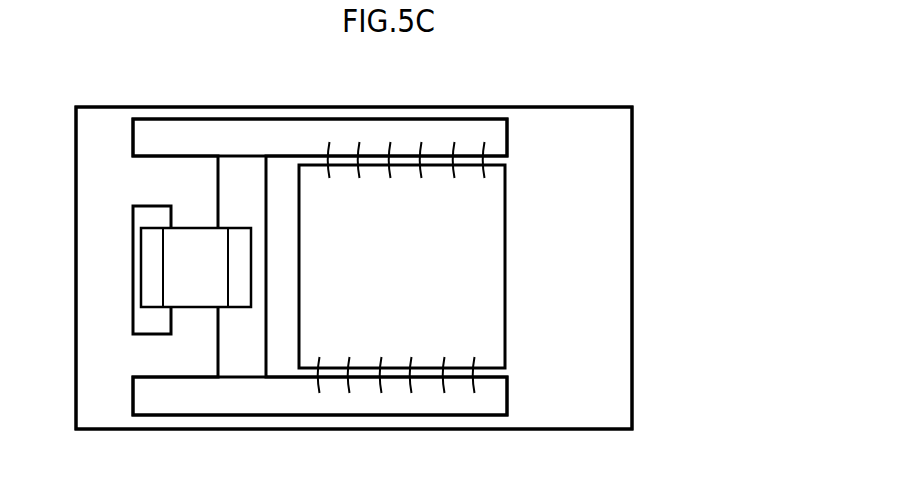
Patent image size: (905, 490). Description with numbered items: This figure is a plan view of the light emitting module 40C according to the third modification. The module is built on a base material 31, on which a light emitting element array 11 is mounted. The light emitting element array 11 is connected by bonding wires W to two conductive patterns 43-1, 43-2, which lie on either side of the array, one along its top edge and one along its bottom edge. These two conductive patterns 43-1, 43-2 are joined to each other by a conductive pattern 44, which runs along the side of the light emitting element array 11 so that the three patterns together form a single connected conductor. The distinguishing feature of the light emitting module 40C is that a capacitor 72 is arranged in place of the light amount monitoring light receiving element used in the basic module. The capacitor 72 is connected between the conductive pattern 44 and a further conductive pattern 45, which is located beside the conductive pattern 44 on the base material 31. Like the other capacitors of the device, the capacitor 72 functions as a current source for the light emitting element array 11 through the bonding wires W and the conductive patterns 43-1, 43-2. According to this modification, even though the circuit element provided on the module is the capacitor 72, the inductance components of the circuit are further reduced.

The light emitting module 40C is at (658, 125).
The base material 31 is at (633, 262).
The light emitting element array 11 is at (505, 262).
The conductive pattern 43-1 is at (507, 395).
The conductive pattern 43-2 is at (508, 135).
The conductive pattern 44 is at (218, 358).
The conductive pattern 45 is at (132, 267).
The capacitor 72 is at (193, 226).
The bonding wire W is at (328, 156).